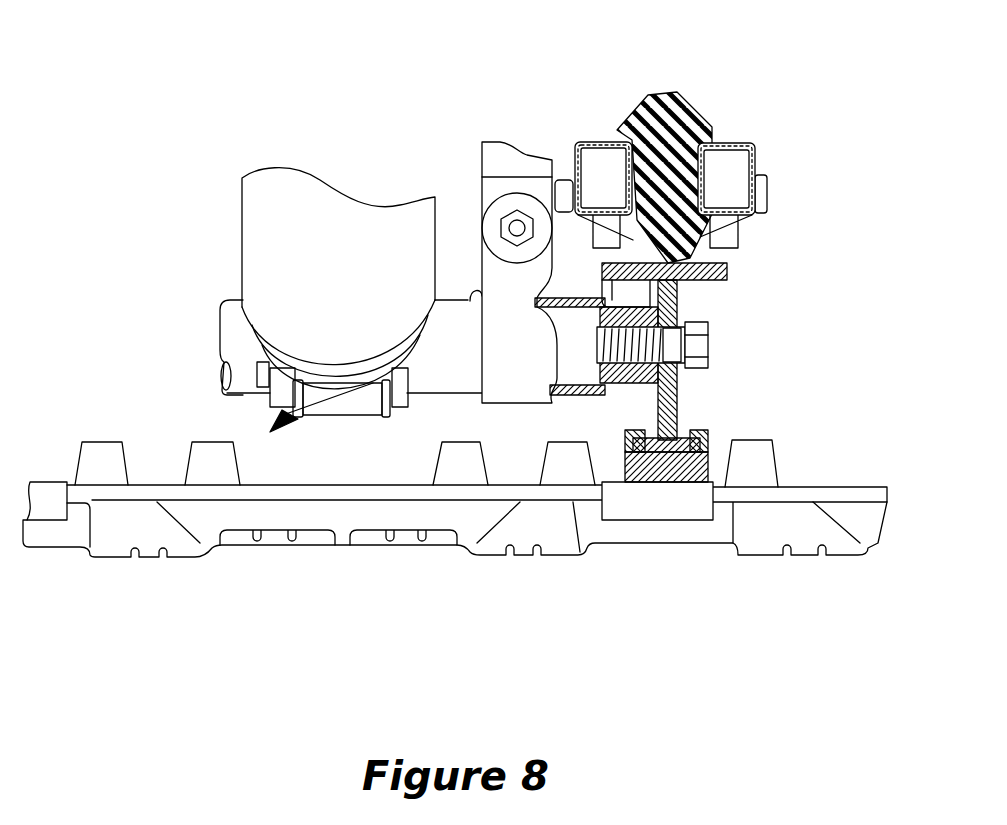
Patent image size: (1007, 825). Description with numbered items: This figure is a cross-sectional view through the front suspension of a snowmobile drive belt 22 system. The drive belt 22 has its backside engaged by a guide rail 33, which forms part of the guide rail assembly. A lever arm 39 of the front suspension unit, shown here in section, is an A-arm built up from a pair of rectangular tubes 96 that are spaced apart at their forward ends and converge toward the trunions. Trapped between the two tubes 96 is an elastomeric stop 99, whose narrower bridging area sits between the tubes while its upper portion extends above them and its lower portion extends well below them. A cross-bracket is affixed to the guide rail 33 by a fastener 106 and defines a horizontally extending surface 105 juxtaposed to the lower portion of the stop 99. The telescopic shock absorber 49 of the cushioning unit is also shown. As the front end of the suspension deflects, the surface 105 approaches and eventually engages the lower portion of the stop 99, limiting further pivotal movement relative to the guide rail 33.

The drive belt 22 is at (563, 556).
The guide rail 33 is at (710, 440).
The lever arm 39 is at (768, 165).
The telescopic shock absorber 49 is at (260, 260).
The rectangular tube 96 is at (573, 145).
The elastomeric stop 99 is at (690, 117).
The horizontally extending surface 105 is at (727, 267).
The fastener 106 is at (708, 347).